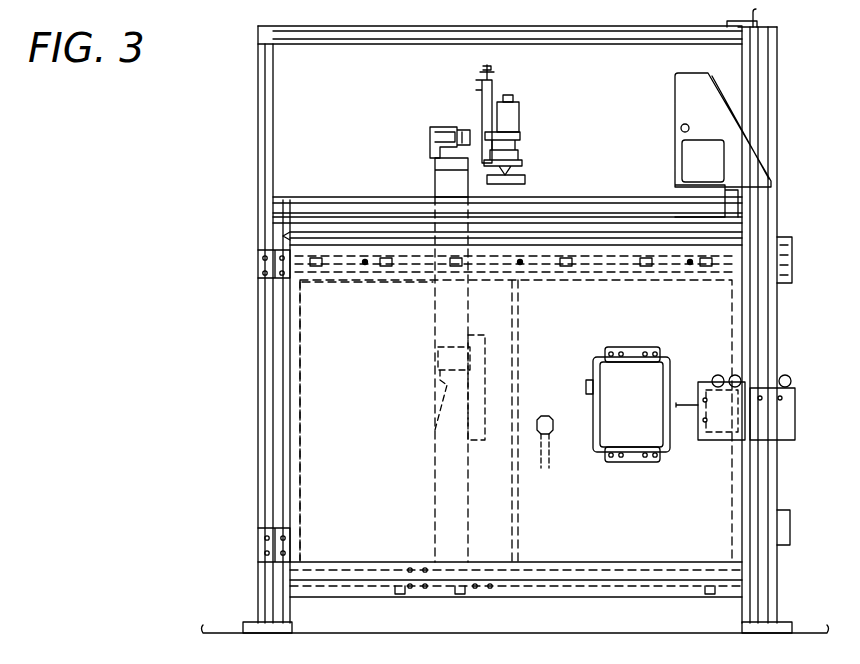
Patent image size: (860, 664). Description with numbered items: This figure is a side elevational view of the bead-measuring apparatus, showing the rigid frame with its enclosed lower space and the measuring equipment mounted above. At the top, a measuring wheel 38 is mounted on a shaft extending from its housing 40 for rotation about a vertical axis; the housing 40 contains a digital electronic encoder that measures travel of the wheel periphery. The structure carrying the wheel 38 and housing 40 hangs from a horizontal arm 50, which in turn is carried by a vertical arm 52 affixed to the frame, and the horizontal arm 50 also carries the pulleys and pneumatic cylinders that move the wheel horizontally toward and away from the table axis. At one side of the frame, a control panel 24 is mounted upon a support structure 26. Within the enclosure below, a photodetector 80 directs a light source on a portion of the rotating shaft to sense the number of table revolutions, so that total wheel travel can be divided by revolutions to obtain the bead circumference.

The control panel 24 is at (692, 92).
The housing 40 is at (510, 118).
The measuring wheel 38 is at (527, 181).
The horizontal arm 50 is at (433, 157).
The vertical arm 52 is at (433, 190).
The support structure 26 is at (310, 455).
The photodetector 80 is at (432, 437).